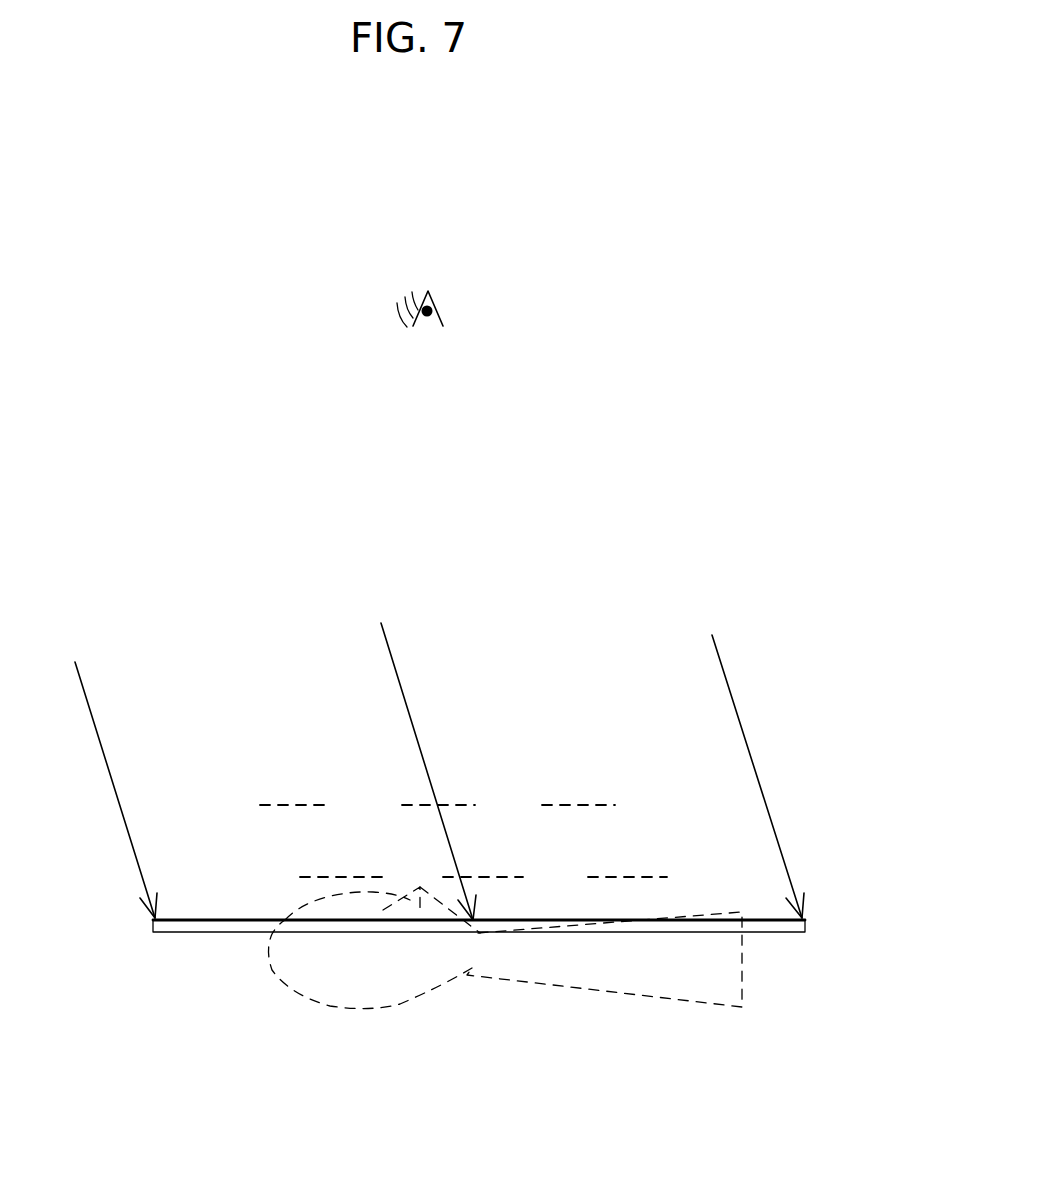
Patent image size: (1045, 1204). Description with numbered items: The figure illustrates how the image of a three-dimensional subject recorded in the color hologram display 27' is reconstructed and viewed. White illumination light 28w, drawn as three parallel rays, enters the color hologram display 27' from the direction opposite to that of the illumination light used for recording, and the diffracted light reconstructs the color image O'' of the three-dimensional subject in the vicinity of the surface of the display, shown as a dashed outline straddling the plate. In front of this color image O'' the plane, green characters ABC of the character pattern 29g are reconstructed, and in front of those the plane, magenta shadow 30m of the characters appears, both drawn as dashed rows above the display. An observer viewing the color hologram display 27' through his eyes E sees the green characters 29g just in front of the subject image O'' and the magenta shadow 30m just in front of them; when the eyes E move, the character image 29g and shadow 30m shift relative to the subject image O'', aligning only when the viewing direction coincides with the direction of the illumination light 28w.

The eyes E is at (434, 308).
The white illumination light 28w is at (727, 678).
The magenta shadow of the characters 30m is at (260, 805).
The character pattern 29g is at (302, 877).
The color hologram display 27' is at (524, 909).
The hologram reproduced image of the three-dimensional subject O'' is at (466, 948).